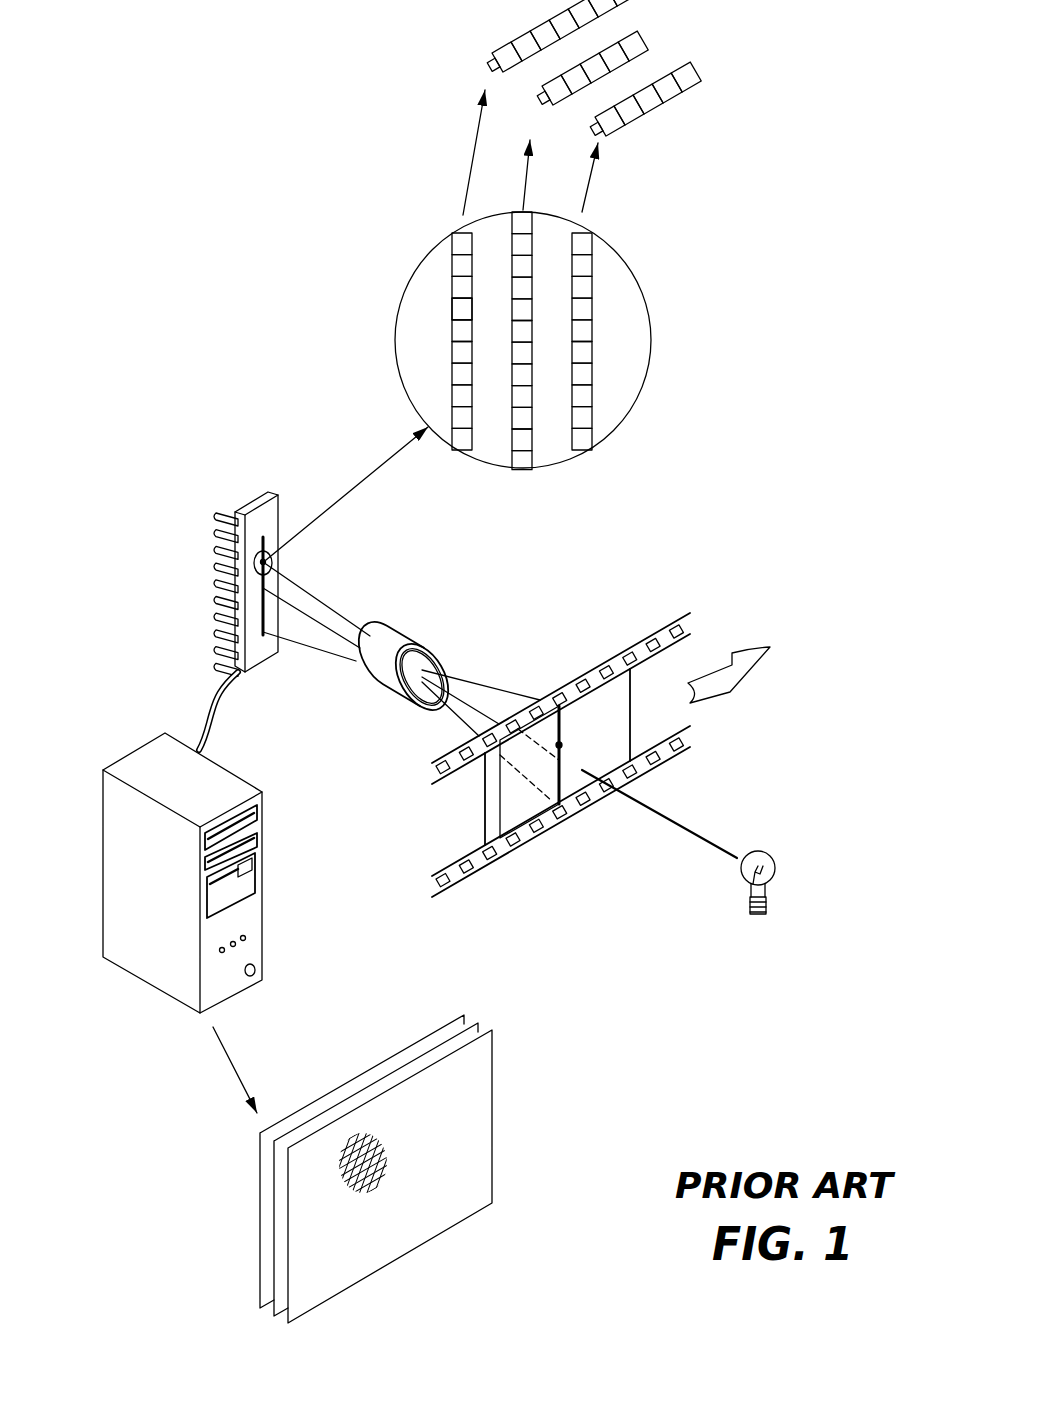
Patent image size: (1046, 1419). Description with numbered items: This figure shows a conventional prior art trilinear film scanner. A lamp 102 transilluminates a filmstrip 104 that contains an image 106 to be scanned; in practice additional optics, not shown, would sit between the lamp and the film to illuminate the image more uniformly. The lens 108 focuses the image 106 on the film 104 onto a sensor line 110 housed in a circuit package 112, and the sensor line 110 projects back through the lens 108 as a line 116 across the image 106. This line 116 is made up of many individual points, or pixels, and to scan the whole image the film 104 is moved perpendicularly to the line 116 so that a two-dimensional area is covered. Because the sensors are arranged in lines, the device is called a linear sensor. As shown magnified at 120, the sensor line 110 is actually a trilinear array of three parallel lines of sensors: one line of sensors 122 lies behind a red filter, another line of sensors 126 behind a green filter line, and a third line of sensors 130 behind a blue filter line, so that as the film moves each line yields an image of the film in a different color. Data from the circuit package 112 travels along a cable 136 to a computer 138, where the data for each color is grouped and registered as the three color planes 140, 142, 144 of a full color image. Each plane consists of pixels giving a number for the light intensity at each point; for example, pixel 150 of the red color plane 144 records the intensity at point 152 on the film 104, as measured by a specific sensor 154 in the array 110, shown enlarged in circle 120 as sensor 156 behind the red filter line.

The lamp 102 is at (772, 860).
The filmstrip 104 is at (561, 768).
The image 106 is at (522, 803).
The lens 108 is at (418, 636).
The sensor line 110 is at (254, 582).
The circuit package 112 is at (225, 577).
The line 116 is at (622, 774).
The magnified view 120 is at (480, 341).
The line of sensors 122 is at (529, 54).
The line of sensors 126 is at (572, 85).
The line of sensors 130 is at (644, 120).
The cable 136 is at (222, 695).
The computer 138 is at (150, 757).
The color plane 140 is at (317, 1097).
The color plane 142 is at (422, 1052).
The red color plane 144 is at (430, 1176).
The pixel 150 is at (376, 1152).
The point 152 is at (562, 744).
The sensor 154 is at (272, 558).
The sensor 156 is at (453, 307).